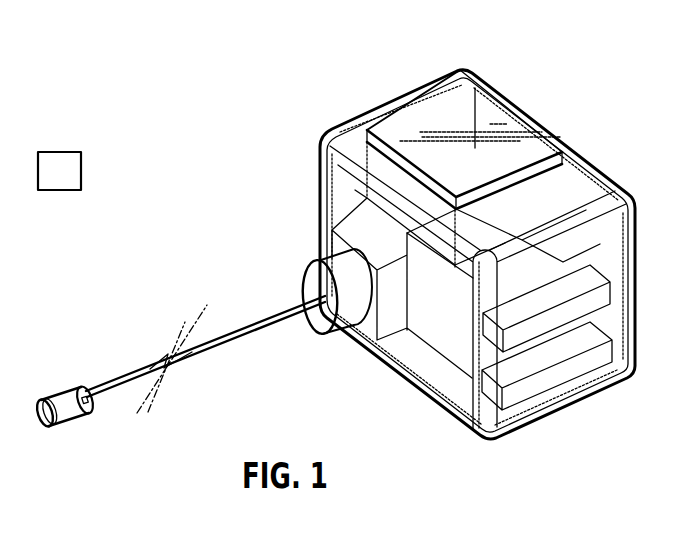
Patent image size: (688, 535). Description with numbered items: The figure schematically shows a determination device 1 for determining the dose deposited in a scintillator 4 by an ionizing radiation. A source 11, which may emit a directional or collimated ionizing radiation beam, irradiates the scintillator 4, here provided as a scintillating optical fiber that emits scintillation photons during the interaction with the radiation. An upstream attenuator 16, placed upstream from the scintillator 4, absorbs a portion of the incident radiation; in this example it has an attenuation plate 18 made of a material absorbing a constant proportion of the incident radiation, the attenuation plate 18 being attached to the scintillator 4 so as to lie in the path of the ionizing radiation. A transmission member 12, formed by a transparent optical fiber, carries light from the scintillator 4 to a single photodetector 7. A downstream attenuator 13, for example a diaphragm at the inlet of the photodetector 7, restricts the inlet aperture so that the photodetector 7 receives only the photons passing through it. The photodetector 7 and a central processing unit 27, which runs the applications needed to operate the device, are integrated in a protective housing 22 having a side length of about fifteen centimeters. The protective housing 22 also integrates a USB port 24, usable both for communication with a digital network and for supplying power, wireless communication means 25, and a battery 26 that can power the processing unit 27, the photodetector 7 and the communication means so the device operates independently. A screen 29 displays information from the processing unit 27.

The determination device 1 is at (150, 281).
The scintillator 4 is at (70, 400).
The single photodetector 7 is at (353, 227).
The source 11 is at (68, 184).
The transmission member 12 is at (123, 386).
The downstream attenuator 13 is at (322, 328).
The upstream attenuator 16 is at (30, 393).
The attenuation plate 18 is at (46, 405).
The protective housing 22 is at (367, 112).
The USB port 24 is at (550, 380).
The wireless communication means 25 is at (612, 288).
The battery 26 is at (563, 260).
The central processing unit 27 is at (375, 167).
The screen 29 is at (437, 122).